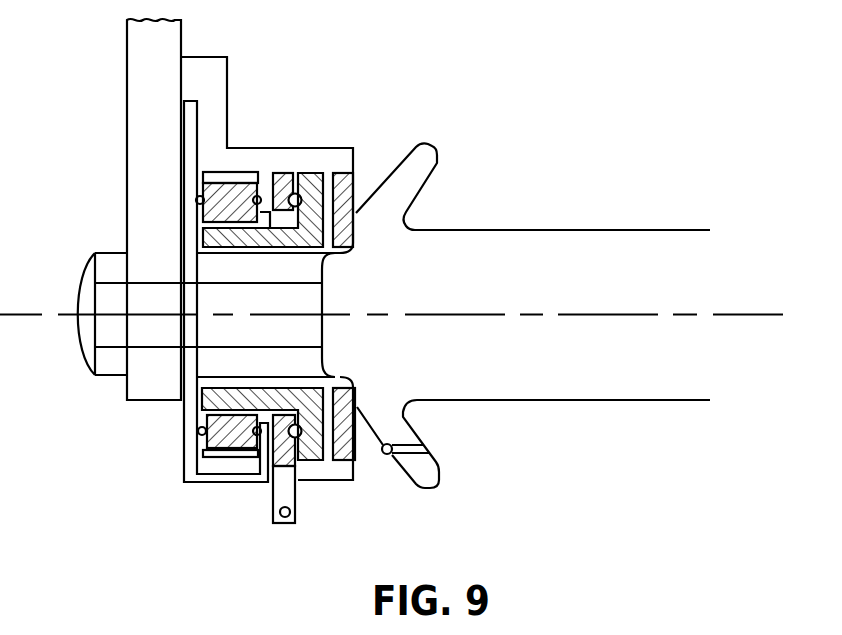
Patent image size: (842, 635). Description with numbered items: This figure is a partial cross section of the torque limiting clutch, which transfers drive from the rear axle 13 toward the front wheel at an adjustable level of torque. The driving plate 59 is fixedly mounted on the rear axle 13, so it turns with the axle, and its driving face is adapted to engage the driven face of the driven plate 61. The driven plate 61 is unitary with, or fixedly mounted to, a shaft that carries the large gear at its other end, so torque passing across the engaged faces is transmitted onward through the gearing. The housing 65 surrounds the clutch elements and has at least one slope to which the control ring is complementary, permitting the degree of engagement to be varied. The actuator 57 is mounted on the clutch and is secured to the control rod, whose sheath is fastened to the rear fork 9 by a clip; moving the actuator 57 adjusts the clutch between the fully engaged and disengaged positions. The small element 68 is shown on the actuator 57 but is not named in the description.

The rear fork 9 is at (147, 75).
The rear axle 13 is at (488, 247).
The actuator 57 is at (287, 488).
The driving plate 59 is at (358, 173).
The driven plate 61 is at (300, 165).
The housing 65 is at (258, 158).
The pin hole 68 is at (272, 508).